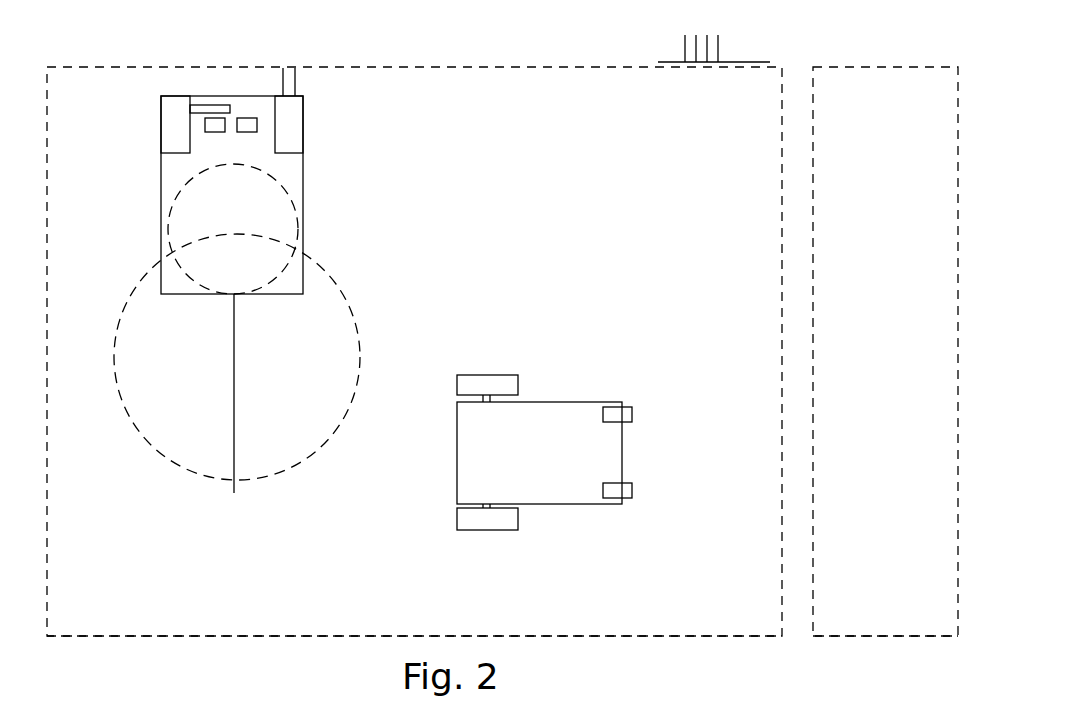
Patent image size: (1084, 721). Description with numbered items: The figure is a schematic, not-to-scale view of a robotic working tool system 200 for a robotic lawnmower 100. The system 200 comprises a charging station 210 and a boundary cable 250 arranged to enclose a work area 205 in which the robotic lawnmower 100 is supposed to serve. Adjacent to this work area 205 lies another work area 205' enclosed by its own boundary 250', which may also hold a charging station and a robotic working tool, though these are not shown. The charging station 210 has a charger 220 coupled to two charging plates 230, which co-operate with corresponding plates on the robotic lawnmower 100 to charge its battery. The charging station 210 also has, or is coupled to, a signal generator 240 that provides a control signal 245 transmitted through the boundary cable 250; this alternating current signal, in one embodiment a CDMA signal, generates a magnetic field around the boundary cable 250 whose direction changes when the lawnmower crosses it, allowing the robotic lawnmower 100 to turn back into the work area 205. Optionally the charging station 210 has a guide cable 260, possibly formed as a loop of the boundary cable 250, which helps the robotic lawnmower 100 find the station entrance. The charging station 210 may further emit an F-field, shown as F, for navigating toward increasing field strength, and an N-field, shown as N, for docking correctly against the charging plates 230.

The robotic lawnmower 100 is at (524, 504).
The robotic working tool system 200 is at (143, 85).
The work area 205 is at (414, 351).
The other work area 205' is at (885, 351).
The charging station 210 is at (161, 158).
The charger 220 is at (173, 106).
The charging plates 230 is at (222, 118).
The signal generator 240 is at (303, 136).
The control signal 245 is at (714, 48).
The boundary cable 250 is at (414, 596).
The boundary 250' is at (885, 594).
The guide cable 260 is at (234, 331).